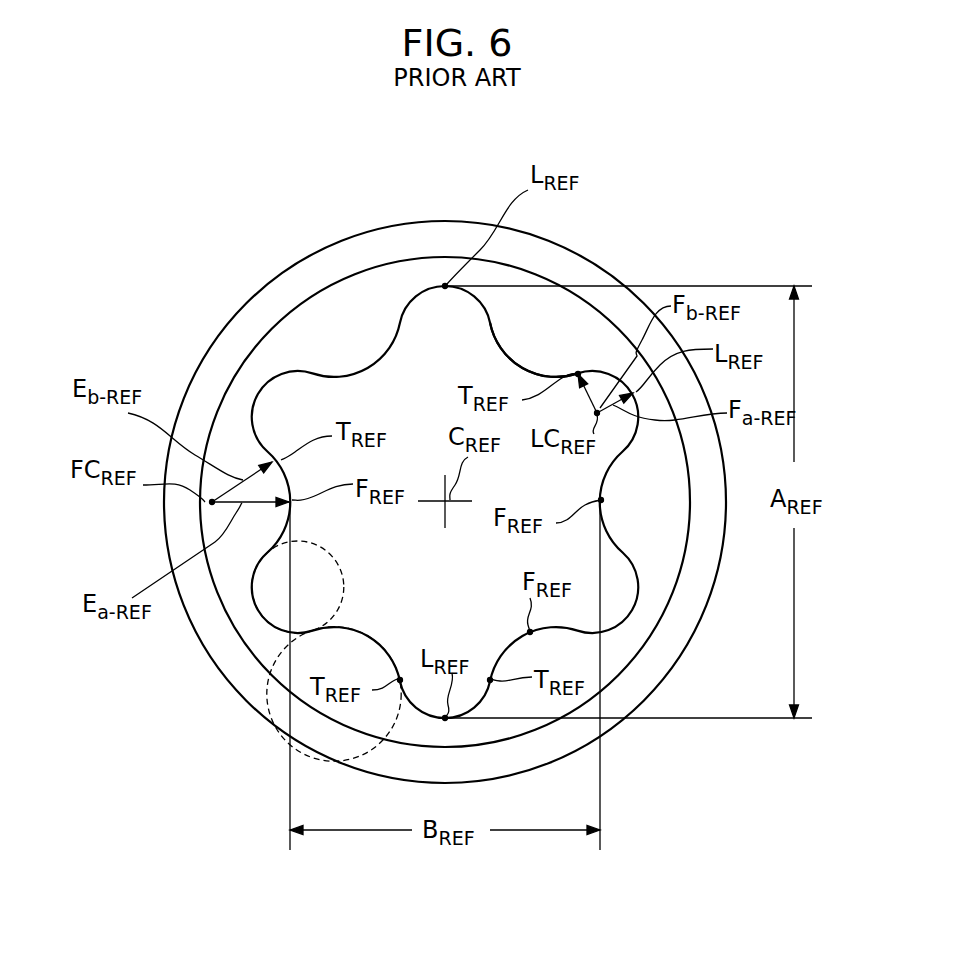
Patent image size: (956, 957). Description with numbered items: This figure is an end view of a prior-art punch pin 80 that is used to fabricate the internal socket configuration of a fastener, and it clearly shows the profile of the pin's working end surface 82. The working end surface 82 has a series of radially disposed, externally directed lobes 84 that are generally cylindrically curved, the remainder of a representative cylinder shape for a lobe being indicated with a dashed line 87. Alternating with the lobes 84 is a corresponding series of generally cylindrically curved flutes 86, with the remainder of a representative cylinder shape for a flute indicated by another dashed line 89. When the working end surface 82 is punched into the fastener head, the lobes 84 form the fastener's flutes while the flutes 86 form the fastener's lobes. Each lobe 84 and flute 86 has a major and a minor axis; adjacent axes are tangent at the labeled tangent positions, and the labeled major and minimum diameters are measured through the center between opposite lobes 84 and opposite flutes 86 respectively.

The punch pin 80 is at (602, 267).
The working end surface 82 is at (370, 392).
The lobes 84 is at (252, 611).
The flutes 86 is at (513, 357).
The dashed line 87 is at (340, 588).
The dashed line 89 is at (276, 742).